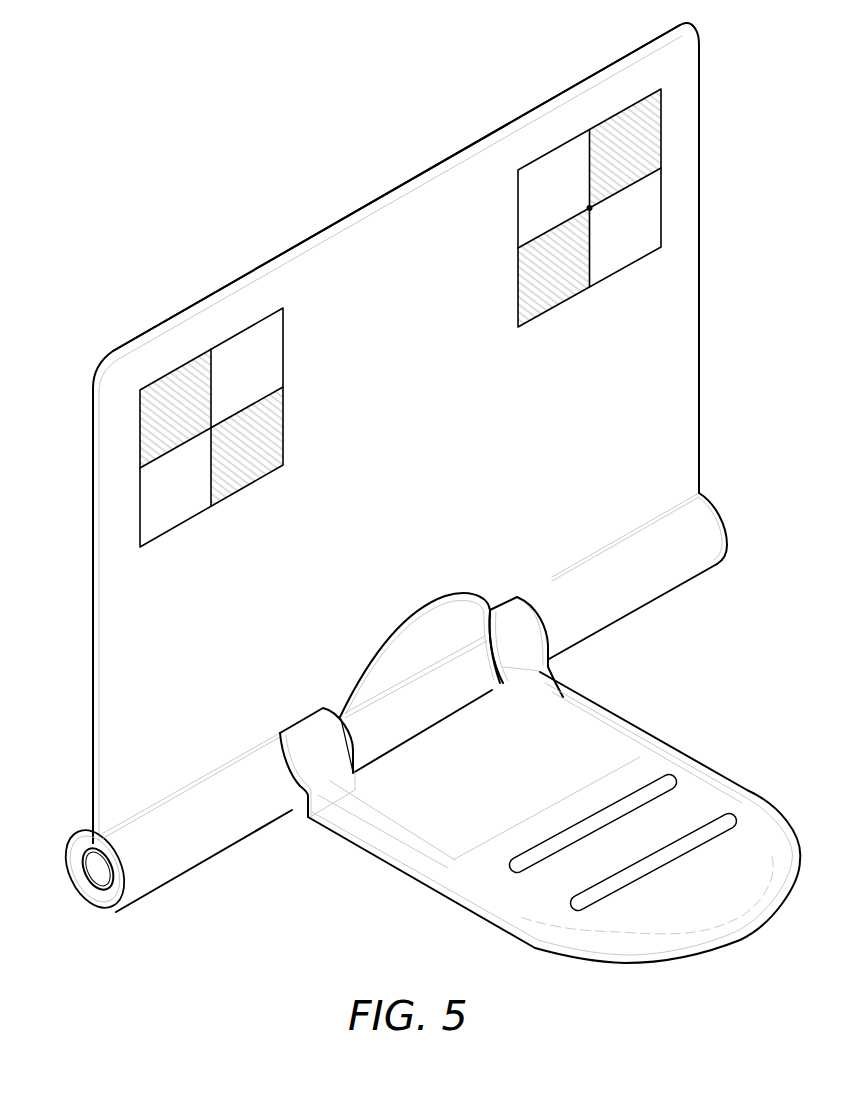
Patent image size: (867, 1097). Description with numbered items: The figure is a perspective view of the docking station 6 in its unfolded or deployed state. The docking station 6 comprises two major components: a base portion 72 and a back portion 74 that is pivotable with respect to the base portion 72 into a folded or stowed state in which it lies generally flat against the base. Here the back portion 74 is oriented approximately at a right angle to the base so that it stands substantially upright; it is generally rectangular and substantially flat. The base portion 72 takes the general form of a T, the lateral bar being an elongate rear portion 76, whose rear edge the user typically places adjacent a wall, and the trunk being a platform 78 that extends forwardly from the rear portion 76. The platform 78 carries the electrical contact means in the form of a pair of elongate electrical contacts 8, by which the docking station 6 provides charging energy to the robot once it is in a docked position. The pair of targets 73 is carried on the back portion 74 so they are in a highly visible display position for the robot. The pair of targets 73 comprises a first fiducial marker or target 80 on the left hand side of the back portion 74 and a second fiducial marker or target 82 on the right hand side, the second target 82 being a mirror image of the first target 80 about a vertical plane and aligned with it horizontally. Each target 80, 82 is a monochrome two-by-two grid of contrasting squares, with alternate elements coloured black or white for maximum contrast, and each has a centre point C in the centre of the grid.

The docking station 6 is at (176, 188).
The pair of targets 73 is at (386, 172).
The back portion 74 is at (86, 463).
The first fiducial marker or target 80 is at (285, 405).
The second fiducial marker or target 82 is at (517, 272).
The centre point C is at (590, 209).
The elongate rear portion 76 is at (100, 903).
The platform 78 is at (563, 695).
The base portion 72 is at (647, 721).
The electrical contacts 8 is at (668, 778).